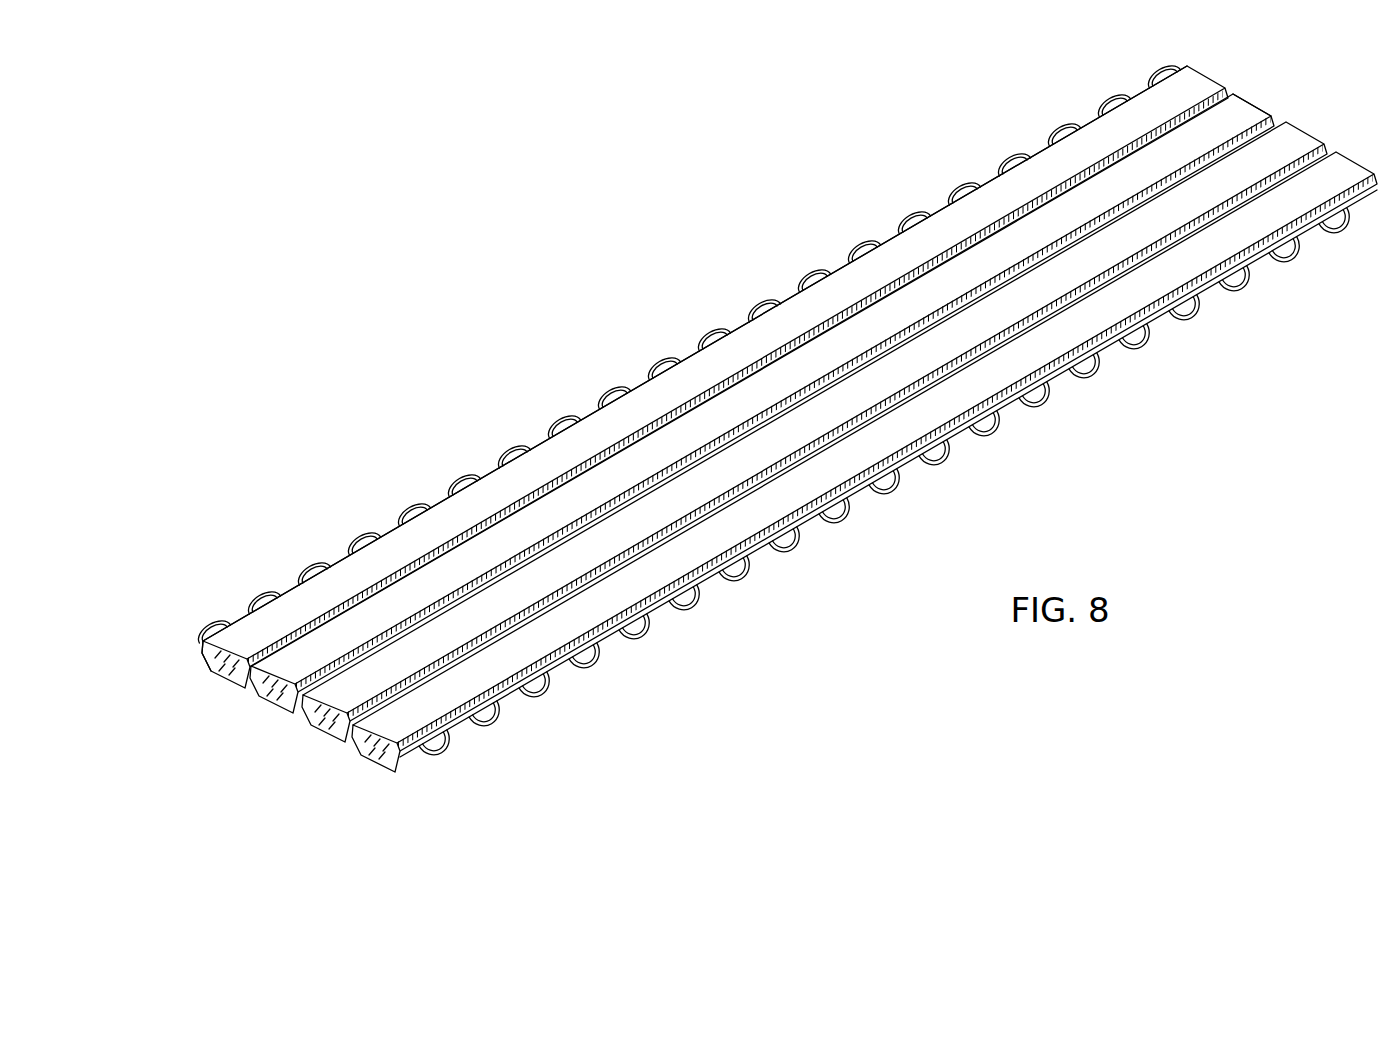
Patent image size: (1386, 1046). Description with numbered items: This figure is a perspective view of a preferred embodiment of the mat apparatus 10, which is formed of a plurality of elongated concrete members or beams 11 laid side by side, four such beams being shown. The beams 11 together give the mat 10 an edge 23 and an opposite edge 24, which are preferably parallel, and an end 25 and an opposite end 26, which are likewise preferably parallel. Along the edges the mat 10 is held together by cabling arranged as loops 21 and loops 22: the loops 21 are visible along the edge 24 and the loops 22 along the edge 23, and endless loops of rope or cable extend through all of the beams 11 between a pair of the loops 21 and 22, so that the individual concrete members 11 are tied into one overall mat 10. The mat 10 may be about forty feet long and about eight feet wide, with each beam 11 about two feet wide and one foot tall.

The mat apparatus 10 is at (414, 182).
The elongated concrete member 11 is at (218, 673).
The loops 21 is at (350, 536).
The loops 22 is at (535, 698).
The edge 23 is at (800, 538).
The edge 24 is at (528, 445).
The end 25 is at (202, 655).
The end 26 is at (1257, 104).